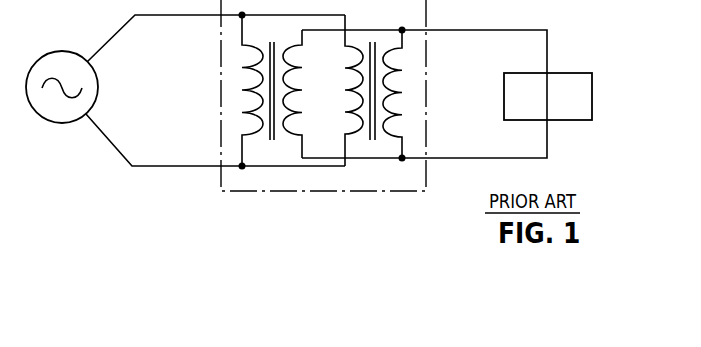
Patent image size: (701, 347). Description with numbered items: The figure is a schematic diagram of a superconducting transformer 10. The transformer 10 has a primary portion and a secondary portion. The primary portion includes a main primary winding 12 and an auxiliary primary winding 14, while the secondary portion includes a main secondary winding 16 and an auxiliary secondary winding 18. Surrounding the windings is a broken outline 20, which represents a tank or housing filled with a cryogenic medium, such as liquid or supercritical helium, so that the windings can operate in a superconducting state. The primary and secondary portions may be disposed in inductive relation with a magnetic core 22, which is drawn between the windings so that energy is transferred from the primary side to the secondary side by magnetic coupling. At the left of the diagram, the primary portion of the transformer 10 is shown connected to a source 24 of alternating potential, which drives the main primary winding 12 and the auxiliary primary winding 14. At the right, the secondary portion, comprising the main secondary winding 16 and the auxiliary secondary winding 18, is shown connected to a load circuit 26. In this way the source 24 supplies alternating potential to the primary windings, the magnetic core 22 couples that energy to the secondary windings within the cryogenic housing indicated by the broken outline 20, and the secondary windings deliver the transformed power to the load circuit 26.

The transformer 10 is at (485, 15).
The main primary winding 12 is at (249, 92).
The auxiliary primary winding 14 is at (348, 109).
The main secondary winding 16 is at (290, 92).
The auxiliary secondary winding 18 is at (388, 96).
The broken outline 20 is at (426, 89).
The magnetic core 22 is at (271, 141).
The source of alternating potential 24 is at (62, 48).
The load circuit 26 is at (569, 73).